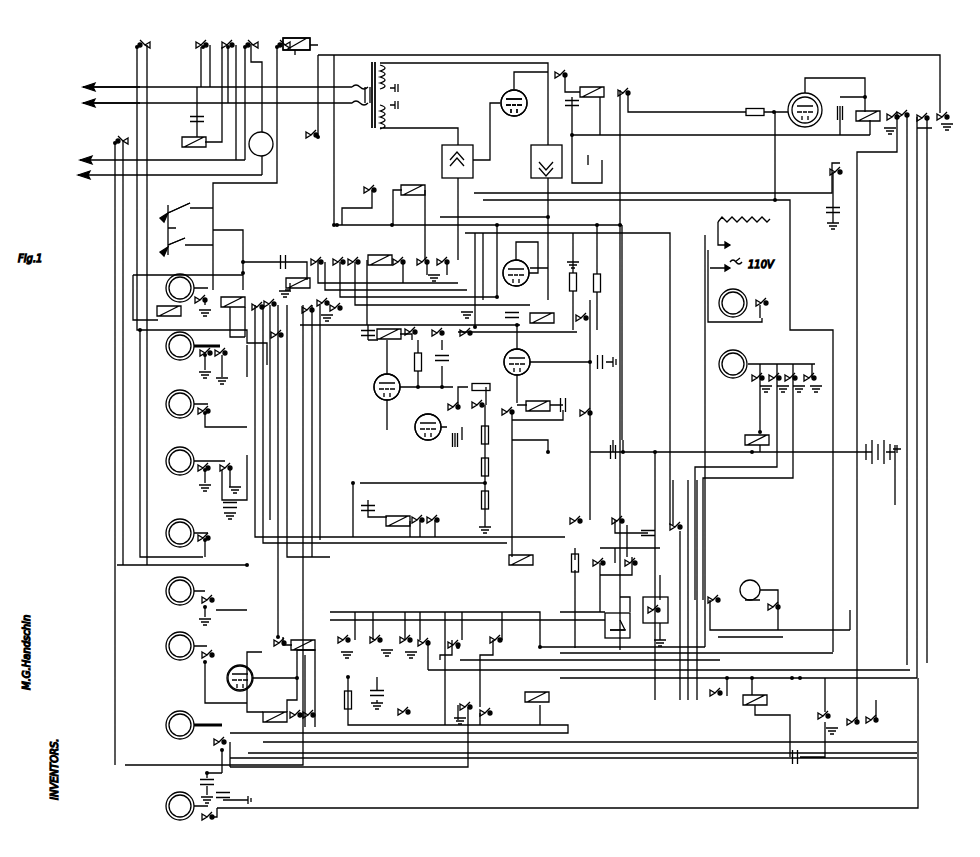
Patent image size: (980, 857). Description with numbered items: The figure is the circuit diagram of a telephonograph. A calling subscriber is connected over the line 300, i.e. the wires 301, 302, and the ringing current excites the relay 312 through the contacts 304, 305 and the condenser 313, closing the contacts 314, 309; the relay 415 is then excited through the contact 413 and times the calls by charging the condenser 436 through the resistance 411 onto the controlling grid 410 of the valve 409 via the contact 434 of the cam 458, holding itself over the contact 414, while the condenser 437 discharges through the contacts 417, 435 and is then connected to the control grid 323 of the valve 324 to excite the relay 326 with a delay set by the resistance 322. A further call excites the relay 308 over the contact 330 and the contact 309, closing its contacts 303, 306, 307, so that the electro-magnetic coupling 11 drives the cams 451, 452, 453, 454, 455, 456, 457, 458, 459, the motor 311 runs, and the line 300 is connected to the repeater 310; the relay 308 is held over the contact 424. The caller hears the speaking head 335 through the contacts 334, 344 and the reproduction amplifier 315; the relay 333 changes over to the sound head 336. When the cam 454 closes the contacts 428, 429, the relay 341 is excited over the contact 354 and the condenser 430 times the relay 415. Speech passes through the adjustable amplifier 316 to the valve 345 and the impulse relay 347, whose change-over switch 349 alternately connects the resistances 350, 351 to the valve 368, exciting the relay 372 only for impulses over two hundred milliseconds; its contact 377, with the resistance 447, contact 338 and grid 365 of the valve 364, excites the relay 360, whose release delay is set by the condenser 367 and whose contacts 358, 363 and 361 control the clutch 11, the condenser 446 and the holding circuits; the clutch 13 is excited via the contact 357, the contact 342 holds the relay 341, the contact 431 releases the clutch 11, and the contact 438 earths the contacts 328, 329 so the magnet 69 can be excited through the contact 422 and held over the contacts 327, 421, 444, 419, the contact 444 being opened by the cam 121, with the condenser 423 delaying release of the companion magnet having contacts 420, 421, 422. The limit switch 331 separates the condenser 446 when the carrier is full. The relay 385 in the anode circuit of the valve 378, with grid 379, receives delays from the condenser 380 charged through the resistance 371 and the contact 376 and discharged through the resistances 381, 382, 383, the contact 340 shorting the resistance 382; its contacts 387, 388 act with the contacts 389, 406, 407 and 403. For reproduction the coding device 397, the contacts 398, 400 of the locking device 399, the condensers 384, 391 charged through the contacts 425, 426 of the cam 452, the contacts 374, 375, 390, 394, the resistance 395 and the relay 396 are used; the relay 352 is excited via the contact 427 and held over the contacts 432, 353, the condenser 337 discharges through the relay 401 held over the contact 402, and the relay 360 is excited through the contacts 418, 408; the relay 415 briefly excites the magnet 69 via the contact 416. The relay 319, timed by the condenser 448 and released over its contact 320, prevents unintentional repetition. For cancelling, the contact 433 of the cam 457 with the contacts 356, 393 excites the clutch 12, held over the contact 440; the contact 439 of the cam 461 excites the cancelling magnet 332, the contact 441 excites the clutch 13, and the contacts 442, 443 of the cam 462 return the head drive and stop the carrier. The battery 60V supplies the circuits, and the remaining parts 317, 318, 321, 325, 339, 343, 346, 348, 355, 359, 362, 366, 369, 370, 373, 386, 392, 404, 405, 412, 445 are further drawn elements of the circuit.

The electro-magnetic coupling 11 is at (178, 315).
The clutch 12 is at (745, 436).
The electro-magnetic clutch 13 is at (543, 704).
The cam 121 is at (752, 580).
The magnet 69 is at (745, 705).
The line 300 is at (80, 95).
The wire 301 is at (120, 80).
The wire 302 is at (119, 97).
The contact 303 is at (140, 38).
The contact 304 is at (202, 38).
The contact 305 is at (229, 38).
The contact 306 is at (249, 38).
The contact 307 is at (279, 38).
The relay 308 is at (310, 44).
The contact 309 is at (312, 142).
The repeater 310 is at (374, 104).
The motor 311 is at (261, 144).
The relay 312 is at (181, 142).
The condenser 313 is at (183, 119).
The contact 314 is at (116, 135).
The reproduction amplifier 315 is at (457, 161).
The adjustable amplifier 316 is at (546, 161).
The tube cathode 317 is at (512, 112).
The electron tube 318 is at (505, 99).
The relay 319 is at (591, 86).
The contact 320 is at (570, 69).
The contact 321 is at (622, 85).
The resistance 322 is at (754, 105).
The control grid 323 is at (797, 104).
The valve 324 is at (811, 106).
The condenser 325 is at (831, 120).
The relay 326 is at (871, 106).
The contact 327 is at (894, 117).
The contact 328 is at (907, 103).
The contact 329 is at (927, 111).
The contact 330 is at (948, 115).
The limit switch 331 is at (832, 179).
The cancelling magnet 332 is at (744, 213).
The change-over relay 333 is at (416, 179).
The contact 334 is at (374, 182).
The speaking head 335 is at (175, 202).
The sound head 336 is at (186, 243).
The condenser 337 is at (272, 259).
The contact 338 is at (310, 251).
The contact 339 is at (335, 251).
The contact 340 is at (358, 251).
The relay 341 is at (380, 250).
The contact 342 is at (404, 254).
The contact 343 is at (429, 262).
The contact 344 is at (448, 267).
The valve 345 is at (519, 266).
The tube cathode 346 is at (516, 279).
The relay 347 is at (547, 312).
The condenser 348 is at (521, 308).
The change-over switch 349 is at (594, 312).
The resistance 350 is at (563, 276).
The resistance 351 is at (607, 280).
The relay 352 is at (242, 289).
The contact 353 is at (259, 298).
The contact 354 is at (271, 290).
The contact 355 is at (309, 316).
The contact 356 is at (324, 302).
The contact 357 is at (282, 328).
The contact 358 is at (343, 316).
The condenser 359 is at (367, 320).
The relay 360 is at (390, 322).
The contact 361 is at (418, 322).
The contact 362 is at (441, 322).
The change-over switch 363 is at (470, 330).
The valve 364 is at (380, 380).
The grid 365 is at (380, 393).
The resistor 366 is at (407, 361).
The condenser 367 is at (446, 370).
The valve 368 is at (521, 357).
The tube cathode 369 is at (521, 367).
The condenser 370 is at (608, 356).
The resistance 371 is at (485, 381).
The relay 372 is at (544, 400).
The condenser 373 is at (577, 398).
The contact 374 is at (596, 405).
The contact 375 is at (512, 404).
The contact 376 is at (473, 386).
The contact 377 is at (458, 412).
The valve 378 is at (422, 420).
The grid 379 is at (422, 431).
The condenser 380 is at (467, 441).
The resistance 381 is at (474, 445).
The resistance 382 is at (472, 467).
The resistance 383 is at (474, 512).
The condenser 384 is at (610, 458).
The relay 385 is at (394, 515).
The condenser 386 is at (369, 499).
The contact 387 is at (422, 513).
The contact 388 is at (441, 513).
The contact 389 is at (582, 529).
The contact 390 is at (619, 513).
The condenser 391 is at (645, 523).
The contact 392 is at (640, 557).
The contact 393 is at (670, 535).
The contact 394 is at (606, 557).
The resistance 395 is at (561, 563).
The relay 396 is at (526, 550).
The coding device 397 is at (605, 615).
The contact 398 is at (603, 629).
The locking device 399 is at (646, 617).
The contact 400 is at (647, 632).
The relay 401 is at (307, 637).
The contact 402 is at (285, 650).
The contact 403 is at (348, 640).
The contact 404 is at (381, 640).
The contact 405 is at (407, 641).
The contact 406 is at (417, 653).
The contact 407 is at (461, 635).
The contact 408 is at (491, 633).
The valve 409 is at (235, 671).
The controlling grid 410 is at (249, 679).
The resistance 411 is at (360, 700).
The condenser 412 is at (384, 689).
The contact 413 is at (318, 707).
The contact 414 is at (303, 707).
The relay 415 is at (272, 725).
The contact 416 is at (415, 705).
The contact 417 is at (464, 706).
The contact 418 is at (495, 706).
The contact 419 is at (720, 701).
The contact 420 is at (828, 716).
The contact 421 is at (851, 732).
The contact 422 is at (877, 731).
The condenser 423 is at (797, 762).
The contact 424 is at (214, 298).
The contact 425 is at (207, 353).
The contact 426 is at (234, 365).
The contact 427 is at (216, 405).
The contact 428 is at (204, 467).
The contact 429 is at (230, 468).
The condenser 430 is at (224, 504).
The contact 431 is at (215, 532).
The contact 432 is at (215, 604).
The contact 433 is at (216, 648).
The contact 434 is at (208, 717).
The contact 435 is at (230, 739).
The condenser 436 is at (194, 788).
The condenser 437 is at (235, 790).
The contact 438 is at (220, 816).
The contact 439 is at (764, 290).
The contact 440 is at (762, 371).
The contact 441 is at (780, 368).
The contact 442 is at (798, 371).
The contact 443 is at (818, 370).
The contact 444 is at (777, 590).
The contact 445 is at (726, 587).
The condenser 446 is at (822, 216).
The resistance 447 is at (294, 280).
The condenser 448 is at (564, 111).
The cam 451 is at (180, 288).
The cam 452 is at (180, 346).
The cam 453 is at (180, 404).
The cam 454 is at (180, 461).
The cam 455 is at (180, 533).
The cam 456 is at (180, 591).
The cam 457 is at (180, 646).
The cam 458 is at (180, 725).
The cam 459 is at (180, 806).
The cam 461 is at (733, 303).
The cam 462 is at (733, 364).
The battery 60V is at (890, 496).